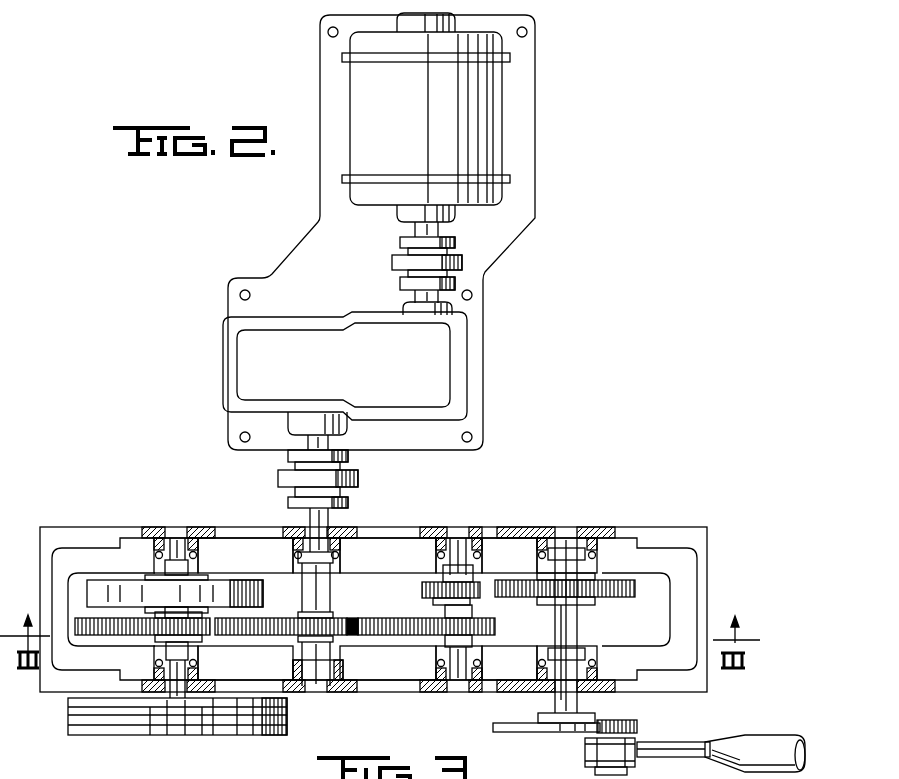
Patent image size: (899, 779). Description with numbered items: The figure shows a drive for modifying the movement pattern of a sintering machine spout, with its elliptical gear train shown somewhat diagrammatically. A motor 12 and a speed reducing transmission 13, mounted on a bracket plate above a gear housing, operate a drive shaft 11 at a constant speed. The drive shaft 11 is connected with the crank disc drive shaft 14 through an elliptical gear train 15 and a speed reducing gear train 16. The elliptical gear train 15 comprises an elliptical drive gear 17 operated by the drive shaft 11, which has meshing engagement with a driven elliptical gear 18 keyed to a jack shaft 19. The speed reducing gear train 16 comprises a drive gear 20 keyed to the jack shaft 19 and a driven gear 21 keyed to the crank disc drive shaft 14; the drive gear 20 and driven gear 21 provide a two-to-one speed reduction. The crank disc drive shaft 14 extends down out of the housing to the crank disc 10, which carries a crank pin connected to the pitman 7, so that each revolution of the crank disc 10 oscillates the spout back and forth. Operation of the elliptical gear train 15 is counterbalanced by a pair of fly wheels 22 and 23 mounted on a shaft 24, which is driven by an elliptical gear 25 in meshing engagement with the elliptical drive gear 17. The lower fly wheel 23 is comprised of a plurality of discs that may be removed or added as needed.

The pitman 7 is at (762, 737).
The crank disc 10 is at (532, 733).
The drive shaft 11 is at (325, 521).
The motor 12 is at (493, 130).
The speed reducing transmission 13 is at (445, 370).
The crank disc drive shaft 14 is at (557, 703).
The elliptical gear train 15 is at (376, 614).
The speed reducing gear train 16 is at (616, 603).
The elliptical drive gear 17 is at (275, 616).
The driven elliptical gear 18 is at (405, 638).
The jack shaft 19 is at (473, 611).
The drive gear 20 is at (422, 586).
The driven gear 21 is at (617, 585).
The fly wheel 22 is at (236, 587).
The fly wheel 23 is at (243, 738).
The shaft 24 is at (180, 678).
The elliptical gear 25 is at (115, 637).